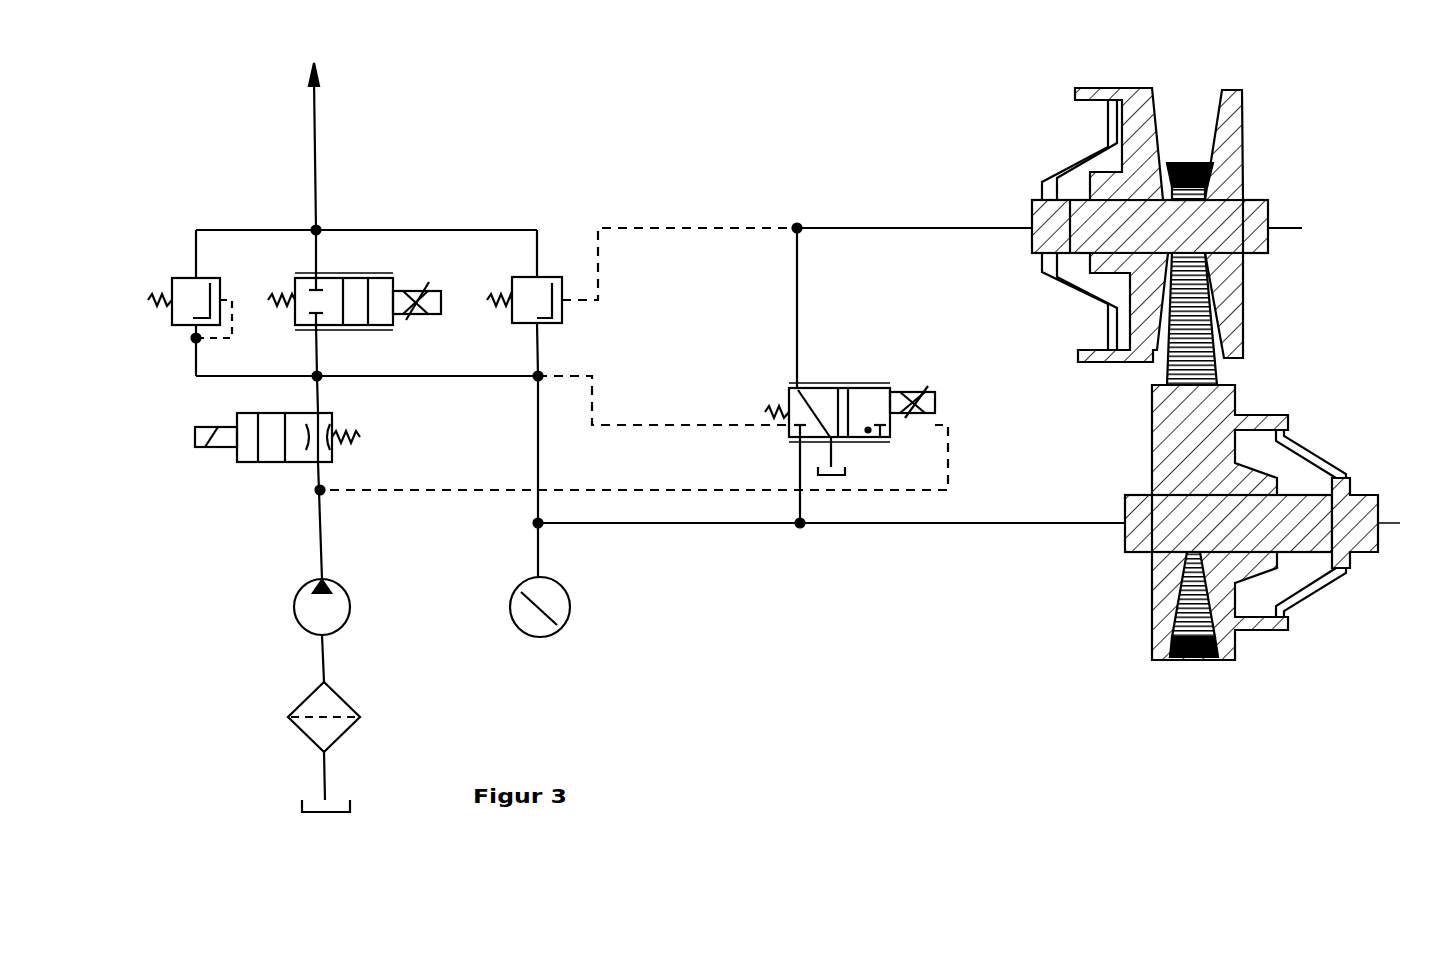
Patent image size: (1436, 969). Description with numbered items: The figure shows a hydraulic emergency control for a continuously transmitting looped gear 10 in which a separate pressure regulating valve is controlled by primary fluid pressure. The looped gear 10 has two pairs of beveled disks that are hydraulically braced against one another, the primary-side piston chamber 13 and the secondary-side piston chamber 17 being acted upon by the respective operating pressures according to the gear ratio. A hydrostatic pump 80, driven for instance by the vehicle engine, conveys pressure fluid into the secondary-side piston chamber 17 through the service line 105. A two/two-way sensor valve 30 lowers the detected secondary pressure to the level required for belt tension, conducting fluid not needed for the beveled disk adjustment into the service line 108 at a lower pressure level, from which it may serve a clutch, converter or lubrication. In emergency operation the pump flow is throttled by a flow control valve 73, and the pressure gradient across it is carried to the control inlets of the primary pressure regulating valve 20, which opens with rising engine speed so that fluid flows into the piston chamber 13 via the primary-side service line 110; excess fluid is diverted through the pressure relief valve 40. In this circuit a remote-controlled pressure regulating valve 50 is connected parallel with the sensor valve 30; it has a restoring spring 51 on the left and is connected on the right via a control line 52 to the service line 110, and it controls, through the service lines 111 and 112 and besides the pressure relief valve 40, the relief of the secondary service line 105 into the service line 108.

The looped gear 10 is at (1288, 353).
The piston chamber 13 is at (1125, 153).
The piston chamber 17 is at (1278, 462).
The primary pressure regulating valve 20 is at (868, 430).
The sensor valve 30 is at (360, 287).
The pressure relief valve 40 is at (183, 285).
The pressure regulating valve 50 is at (541, 290).
The restoring spring 51 is at (490, 293).
The control line 52 is at (612, 228).
The flow control valve 73 is at (300, 447).
The hydrostatic pump 80 is at (303, 607).
The service line 105 is at (451, 376).
The service line 108 is at (315, 208).
The service line 110 is at (838, 228).
The service line 111 is at (663, 290).
The service line 112 is at (366, 192).